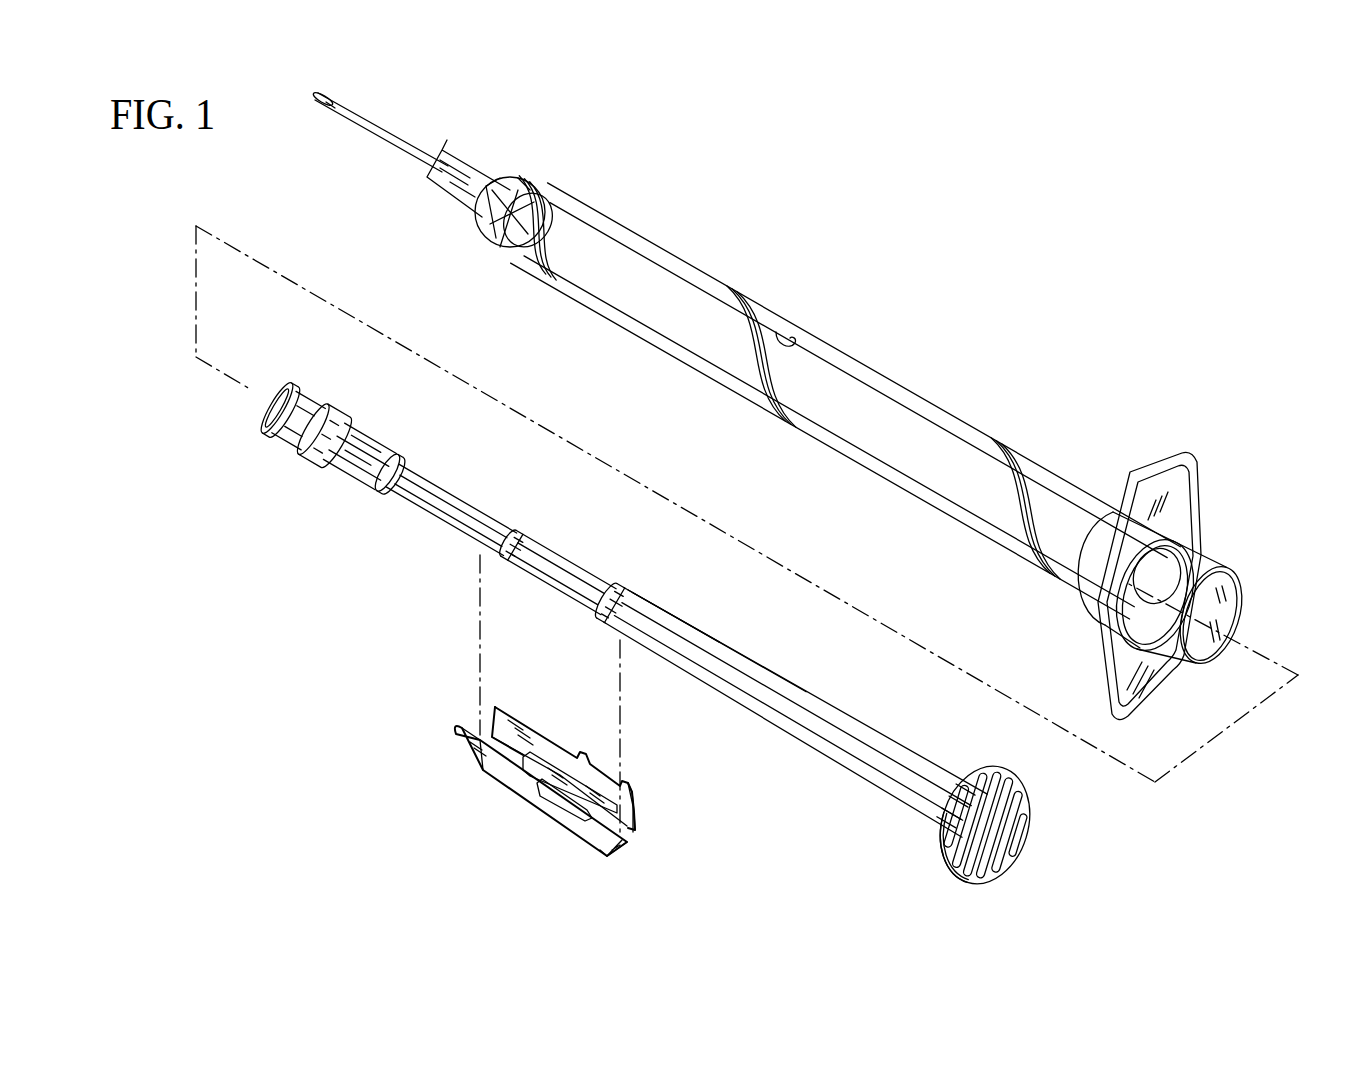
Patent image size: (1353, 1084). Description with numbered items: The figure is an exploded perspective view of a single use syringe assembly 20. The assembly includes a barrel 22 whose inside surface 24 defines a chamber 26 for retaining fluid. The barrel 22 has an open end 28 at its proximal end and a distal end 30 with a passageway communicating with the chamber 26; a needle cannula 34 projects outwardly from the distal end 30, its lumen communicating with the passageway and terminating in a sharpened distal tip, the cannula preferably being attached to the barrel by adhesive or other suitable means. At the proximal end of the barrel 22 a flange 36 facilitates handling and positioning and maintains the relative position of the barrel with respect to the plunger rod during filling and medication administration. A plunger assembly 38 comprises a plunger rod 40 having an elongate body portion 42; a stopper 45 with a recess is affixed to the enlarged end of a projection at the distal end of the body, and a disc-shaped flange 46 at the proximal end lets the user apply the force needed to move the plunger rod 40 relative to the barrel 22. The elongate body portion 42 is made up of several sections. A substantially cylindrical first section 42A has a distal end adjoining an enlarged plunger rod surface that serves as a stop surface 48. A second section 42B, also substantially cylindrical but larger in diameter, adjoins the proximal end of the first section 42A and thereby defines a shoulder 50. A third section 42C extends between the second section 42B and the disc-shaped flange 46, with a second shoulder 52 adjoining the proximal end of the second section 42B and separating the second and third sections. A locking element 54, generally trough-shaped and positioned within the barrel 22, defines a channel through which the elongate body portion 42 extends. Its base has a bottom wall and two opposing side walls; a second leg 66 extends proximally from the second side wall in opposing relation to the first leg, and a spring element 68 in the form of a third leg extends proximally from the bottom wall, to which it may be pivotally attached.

The single use syringe assembly 20 is at (341, 614).
The barrel 22 is at (884, 371).
The inside surface 24 is at (776, 332).
The chamber 26 is at (690, 300).
The open end 28 is at (1240, 585).
The distal end 30 is at (522, 172).
The needle cannula 34 is at (398, 131).
The flange 36 is at (1137, 462).
The plunger assembly 38 is at (305, 463).
The plunger rod 40 is at (778, 668).
The elongate body portion 42 is at (822, 766).
The first section 42A is at (452, 482).
The second section 42B is at (568, 545).
The third section 42C is at (705, 628).
The stopper 45 is at (262, 418).
The disc-shaped flange 46 is at (962, 775).
The stop surface 48 is at (400, 458).
The shoulder 50 is at (508, 532).
The second shoulder 52 is at (612, 592).
The locking element 54 is at (487, 778).
The second leg 66 is at (637, 822).
The spring element 68 is at (630, 846).